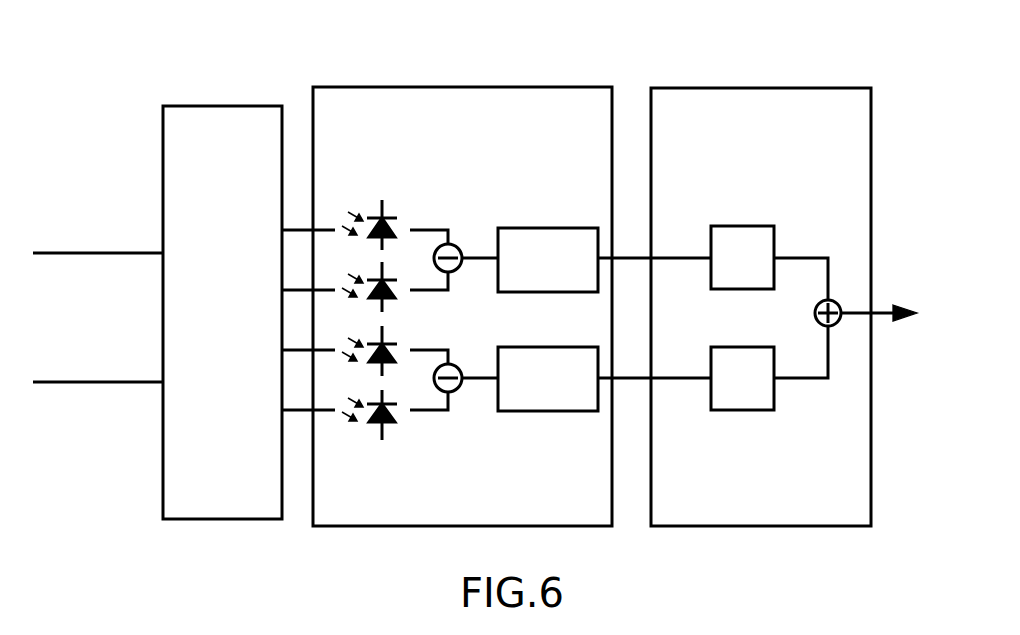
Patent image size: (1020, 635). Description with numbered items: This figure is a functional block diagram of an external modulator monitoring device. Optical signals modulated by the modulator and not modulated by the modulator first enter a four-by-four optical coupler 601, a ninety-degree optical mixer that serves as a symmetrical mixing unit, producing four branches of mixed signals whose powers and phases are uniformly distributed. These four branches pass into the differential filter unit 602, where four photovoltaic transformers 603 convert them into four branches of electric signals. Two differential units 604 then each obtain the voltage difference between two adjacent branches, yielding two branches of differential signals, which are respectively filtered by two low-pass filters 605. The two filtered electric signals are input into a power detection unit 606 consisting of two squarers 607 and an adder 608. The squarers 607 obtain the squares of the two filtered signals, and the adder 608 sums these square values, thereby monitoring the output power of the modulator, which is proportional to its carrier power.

The 4×4 optical coupler 601 is at (264, 105).
The differential filter unit 602 is at (363, 87).
The photovoltaic transformers 603 is at (386, 202).
The differential units 604 is at (464, 240).
The low-pass filters 605 is at (548, 228).
The power detection unit 606 is at (722, 88).
The squarers 607 is at (745, 226).
The adder 608 is at (836, 300).